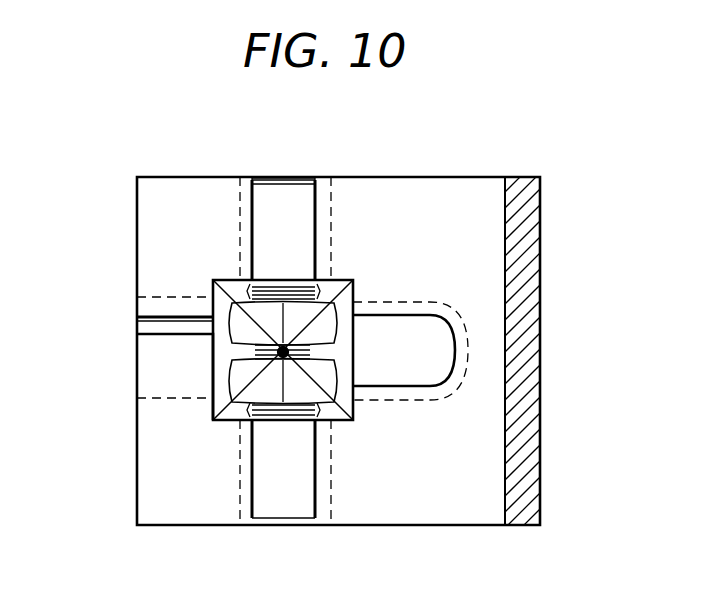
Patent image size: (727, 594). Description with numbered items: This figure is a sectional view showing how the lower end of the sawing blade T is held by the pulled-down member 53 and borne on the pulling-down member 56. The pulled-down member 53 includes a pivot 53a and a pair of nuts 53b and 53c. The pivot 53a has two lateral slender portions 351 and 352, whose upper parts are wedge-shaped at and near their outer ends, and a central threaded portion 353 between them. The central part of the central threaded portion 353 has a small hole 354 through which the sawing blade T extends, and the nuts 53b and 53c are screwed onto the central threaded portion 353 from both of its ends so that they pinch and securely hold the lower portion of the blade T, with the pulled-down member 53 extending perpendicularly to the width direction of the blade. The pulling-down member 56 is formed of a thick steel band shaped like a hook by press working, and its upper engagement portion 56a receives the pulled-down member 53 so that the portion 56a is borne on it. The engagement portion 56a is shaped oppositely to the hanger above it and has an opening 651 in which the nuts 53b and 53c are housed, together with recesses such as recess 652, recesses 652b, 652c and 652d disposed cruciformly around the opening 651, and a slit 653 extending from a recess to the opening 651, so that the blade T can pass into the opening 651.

The pulled-down member 53 is at (254, 178).
The pivot 53a is at (277, 178).
The nut 53b is at (232, 310).
The nut 53c is at (232, 370).
The pulling-down member 56 is at (523, 534).
The upper engagement portion 56a is at (160, 243).
The lateral slender portion 351 is at (300, 195).
The lateral slender portion 352 is at (268, 487).
The central threaded portion 353 is at (322, 290).
The small hole 354 is at (368, 312).
The opening 651 is at (210, 407).
The lower frame block 652 is at (168, 377).
The recess 652b is at (315, 459).
The recess 652c is at (445, 358).
The recess 652d is at (317, 222).
The slit 653 is at (170, 328).
The sawing blade T is at (283, 352).